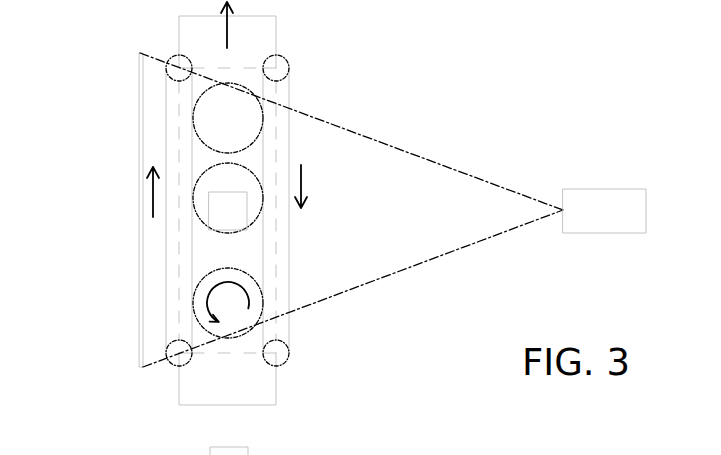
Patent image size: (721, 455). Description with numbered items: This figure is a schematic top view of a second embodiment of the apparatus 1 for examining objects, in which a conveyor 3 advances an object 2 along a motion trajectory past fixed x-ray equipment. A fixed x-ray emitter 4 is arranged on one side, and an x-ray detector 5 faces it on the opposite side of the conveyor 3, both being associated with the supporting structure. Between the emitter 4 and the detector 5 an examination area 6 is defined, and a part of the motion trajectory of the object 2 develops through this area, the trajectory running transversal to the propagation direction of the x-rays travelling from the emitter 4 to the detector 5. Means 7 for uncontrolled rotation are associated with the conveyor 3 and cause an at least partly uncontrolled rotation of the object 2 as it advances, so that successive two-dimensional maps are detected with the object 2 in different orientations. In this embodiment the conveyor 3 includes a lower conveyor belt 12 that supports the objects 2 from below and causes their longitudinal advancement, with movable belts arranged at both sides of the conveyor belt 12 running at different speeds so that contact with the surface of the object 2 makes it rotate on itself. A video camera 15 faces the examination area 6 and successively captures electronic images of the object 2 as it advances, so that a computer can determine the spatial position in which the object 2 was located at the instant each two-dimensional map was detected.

The inspection system 1 is at (495, 112).
The object 2 is at (227, 113).
The conveyor 3 is at (155, 408).
The x-ray emitter 4 is at (613, 214).
The x-ray detector 5 is at (140, 287).
The examination area 6 is at (377, 252).
The means for uncontrolled rotation 7 is at (283, 372).
The conveyor belt 12 is at (227, 377).
The video camera 15 is at (228, 209).